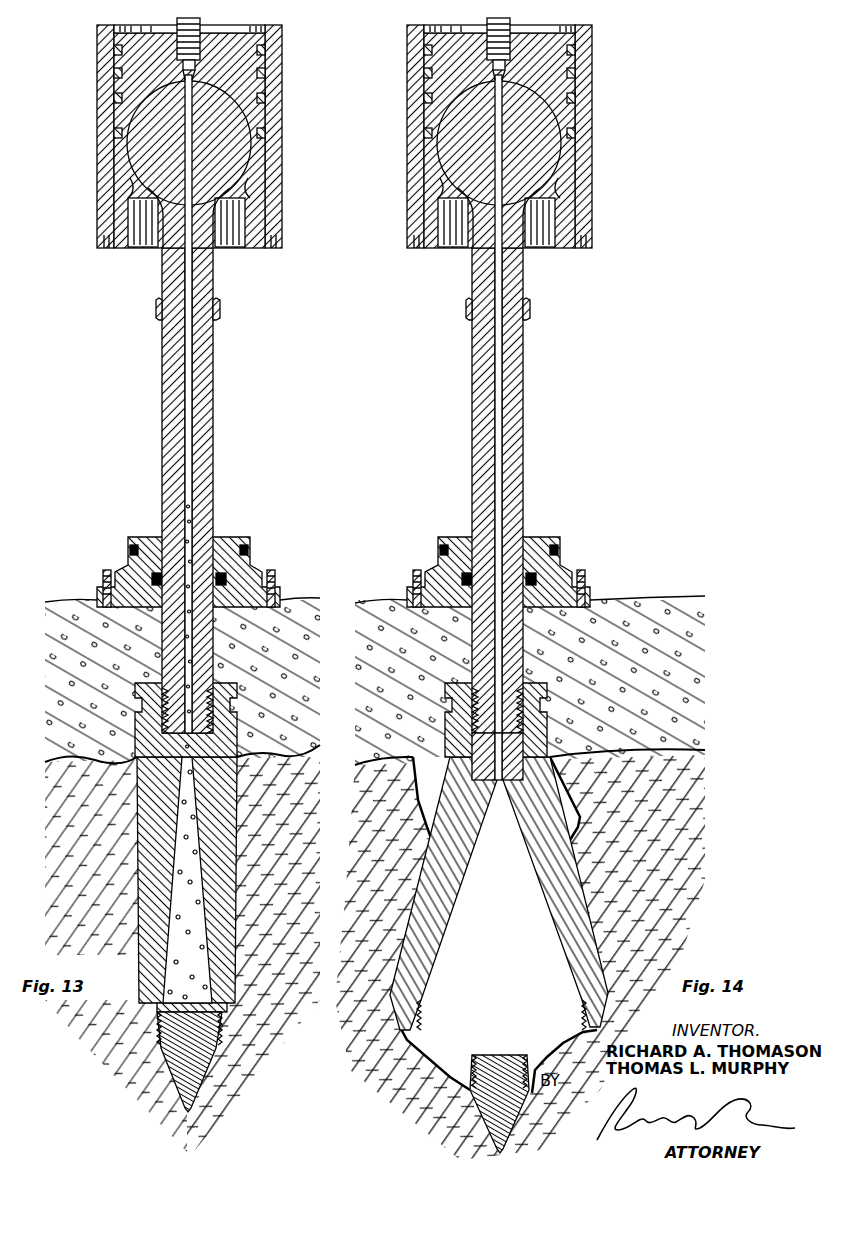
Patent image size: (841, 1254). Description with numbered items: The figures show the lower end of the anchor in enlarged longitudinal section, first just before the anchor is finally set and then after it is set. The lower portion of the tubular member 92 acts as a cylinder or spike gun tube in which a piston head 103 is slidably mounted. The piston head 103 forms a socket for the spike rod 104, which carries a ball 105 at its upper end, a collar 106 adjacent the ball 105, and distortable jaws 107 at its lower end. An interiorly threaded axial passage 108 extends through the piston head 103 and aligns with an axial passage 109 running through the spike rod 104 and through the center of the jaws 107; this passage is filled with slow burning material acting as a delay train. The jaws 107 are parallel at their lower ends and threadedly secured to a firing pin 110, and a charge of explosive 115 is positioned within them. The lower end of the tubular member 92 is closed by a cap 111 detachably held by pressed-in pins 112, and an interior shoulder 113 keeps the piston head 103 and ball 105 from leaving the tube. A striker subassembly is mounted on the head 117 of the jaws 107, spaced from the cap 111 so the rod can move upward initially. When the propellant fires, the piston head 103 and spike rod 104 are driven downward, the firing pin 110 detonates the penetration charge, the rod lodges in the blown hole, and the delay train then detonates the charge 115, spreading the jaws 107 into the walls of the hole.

In FIG. 13, the tubular member 92 is at (284, 213).
In FIG. 13, the piston head 103 is at (250, 26).
In FIG. 13, the spike rod 104 is at (214, 413).
In FIG. 14, the spike rod 104 is at (525, 470).
In FIG. 13, the ball 105 is at (246, 190).
In FIG. 13, the collar 106 is at (215, 300).
In FIG. 13, the distortable jaws 107 is at (141, 938).
In FIG. 14, the distortable jaws 107 is at (407, 900).
In FIG. 13, the axial passage 108 is at (190, 531).
In FIG. 13, the axial passage 109 is at (190, 437).
In FIG. 14, the axial passage 109 is at (498, 470).
In FIG. 14, the firing pin 110 is at (474, 1100).
In FIG. 13, the cap 111 is at (270, 610).
In FIG. 13, the pressed-in pins 112 is at (272, 585).
In FIG. 13, the interior shoulder 113 is at (249, 190).
In FIG. 13, the explosive charge 115 is at (183, 893).
In FIG. 13, the head 117 is at (237, 727).
In FIG. 14, the head 117 is at (548, 727).